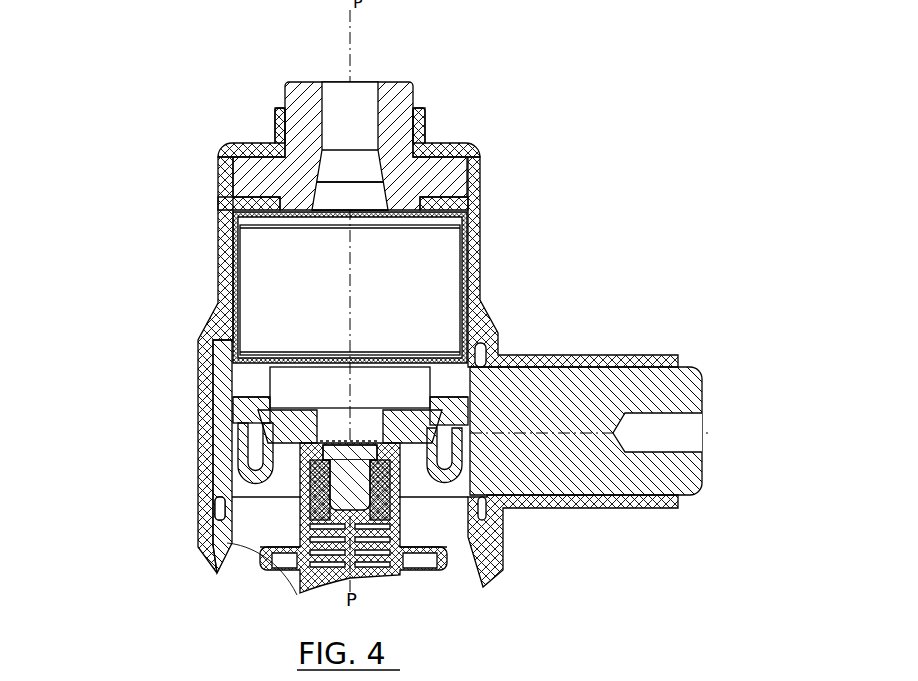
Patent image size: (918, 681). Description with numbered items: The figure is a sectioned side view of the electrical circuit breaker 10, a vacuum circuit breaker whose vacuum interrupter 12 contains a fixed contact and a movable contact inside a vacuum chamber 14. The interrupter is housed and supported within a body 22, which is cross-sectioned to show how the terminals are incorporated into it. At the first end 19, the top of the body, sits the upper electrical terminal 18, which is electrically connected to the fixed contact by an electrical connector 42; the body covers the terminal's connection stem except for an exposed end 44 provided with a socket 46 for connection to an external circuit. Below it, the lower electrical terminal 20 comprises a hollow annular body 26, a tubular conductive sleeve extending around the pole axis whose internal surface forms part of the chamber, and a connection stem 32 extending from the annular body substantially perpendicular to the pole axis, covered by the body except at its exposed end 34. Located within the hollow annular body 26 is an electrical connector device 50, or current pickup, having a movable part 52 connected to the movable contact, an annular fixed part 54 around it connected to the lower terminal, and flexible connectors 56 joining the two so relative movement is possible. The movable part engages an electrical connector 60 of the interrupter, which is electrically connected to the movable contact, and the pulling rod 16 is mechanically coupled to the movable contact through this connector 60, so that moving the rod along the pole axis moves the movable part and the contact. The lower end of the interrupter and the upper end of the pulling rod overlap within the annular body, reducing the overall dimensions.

The electrical circuit breaker 10 is at (606, 116).
The vacuum interrupter 12 is at (232, 285).
The vacuum chamber 14 is at (447, 267).
The pulling rod 16 is at (287, 538).
The upper electrical terminal 18 is at (418, 99).
The first end of the body 19 is at (242, 143).
The lower electrical terminal 20 is at (205, 470).
The body 22 is at (209, 200).
The hollow annular body 26 is at (225, 381).
The connection stem 32 is at (593, 382).
The end of the connection stem 34 is at (701, 394).
The electrical connector 42 is at (375, 195).
The end of the connection stem 44 is at (297, 91).
The socket 46 is at (368, 88).
The electrical connector device 50 is at (293, 539).
The movable part 52 is at (430, 442).
The fixed part 54 is at (245, 410).
The flexible connectors 56 is at (250, 478).
The electrical connector 60 is at (350, 433).